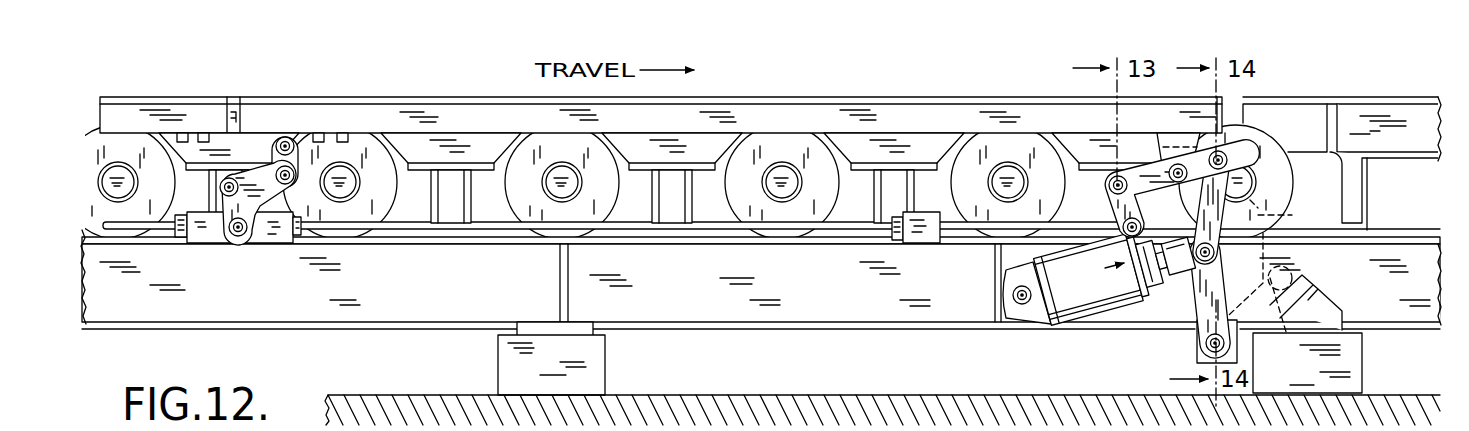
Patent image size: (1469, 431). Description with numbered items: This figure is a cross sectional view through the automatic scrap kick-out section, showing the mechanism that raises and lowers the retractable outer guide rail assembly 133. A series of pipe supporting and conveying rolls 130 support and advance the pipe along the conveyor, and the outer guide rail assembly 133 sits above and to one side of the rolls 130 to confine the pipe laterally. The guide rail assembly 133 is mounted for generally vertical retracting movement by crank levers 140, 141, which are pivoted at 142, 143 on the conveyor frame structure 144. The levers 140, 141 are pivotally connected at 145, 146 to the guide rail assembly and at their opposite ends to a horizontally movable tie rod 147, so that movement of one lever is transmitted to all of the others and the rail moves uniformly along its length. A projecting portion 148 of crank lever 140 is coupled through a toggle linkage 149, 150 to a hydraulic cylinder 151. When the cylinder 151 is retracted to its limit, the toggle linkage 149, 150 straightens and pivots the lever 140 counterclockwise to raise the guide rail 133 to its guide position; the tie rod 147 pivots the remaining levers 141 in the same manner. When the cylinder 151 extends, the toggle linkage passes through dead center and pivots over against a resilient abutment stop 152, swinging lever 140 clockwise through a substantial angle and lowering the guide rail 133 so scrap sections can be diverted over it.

The pipe supporting and conveying rolls 130 is at (661, 96).
The outer guide rail assembly 133 is at (430, 121).
The crank lever 140 is at (1149, 170).
The crank lever 141 is at (263, 187).
The pivot 142 is at (1116, 182).
The pivot 143 is at (227, 193).
The conveyor frame structure 144 is at (487, 292).
The pivotal connection 145 is at (1258, 187).
The pivotal connection 146 is at (292, 167).
The tie rod 147 is at (672, 230).
The projecting portion 148 is at (1230, 152).
The toggle linkage 149 is at (1262, 215).
The toggle linkage 150 is at (1198, 290).
The hydraulic cylinder 151 is at (1073, 305).
The resilient abutment stop 152 is at (1298, 290).